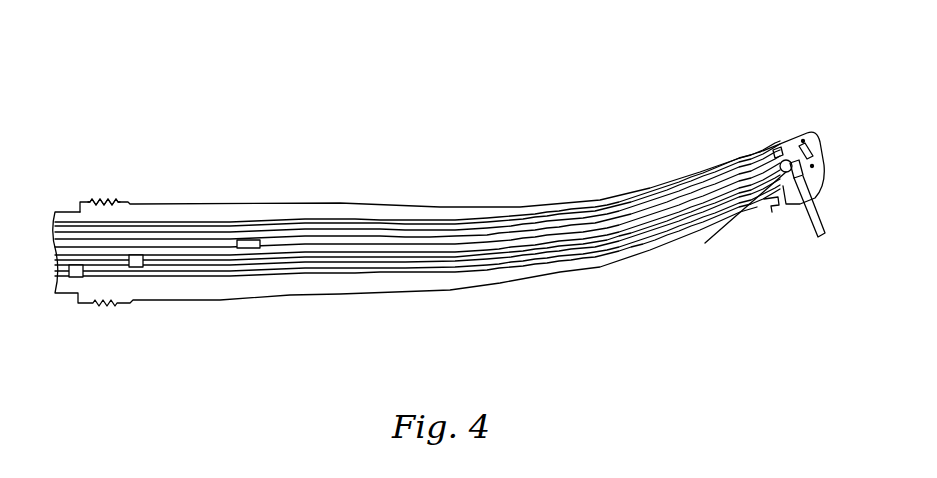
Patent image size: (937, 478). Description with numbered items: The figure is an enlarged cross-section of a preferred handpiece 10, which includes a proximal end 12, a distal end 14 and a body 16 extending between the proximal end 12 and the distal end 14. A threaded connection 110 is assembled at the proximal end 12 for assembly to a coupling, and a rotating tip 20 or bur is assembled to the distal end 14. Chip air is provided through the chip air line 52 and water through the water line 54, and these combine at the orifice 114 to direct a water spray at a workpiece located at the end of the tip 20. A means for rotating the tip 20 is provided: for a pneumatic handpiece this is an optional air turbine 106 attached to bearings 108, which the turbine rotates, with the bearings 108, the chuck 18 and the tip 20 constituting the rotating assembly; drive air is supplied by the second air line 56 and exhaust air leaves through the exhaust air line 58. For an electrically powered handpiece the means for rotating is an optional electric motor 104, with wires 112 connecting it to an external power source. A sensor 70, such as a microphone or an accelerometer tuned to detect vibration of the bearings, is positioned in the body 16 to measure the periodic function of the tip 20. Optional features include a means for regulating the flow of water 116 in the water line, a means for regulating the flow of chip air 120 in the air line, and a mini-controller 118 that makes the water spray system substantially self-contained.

The handpiece 10 is at (461, 199).
The proximal end 12 is at (218, 300).
The distal end 14 is at (804, 175).
The body 16 is at (340, 203).
The chuck 18 is at (800, 136).
The rotating tip 20 is at (818, 212).
The chip air line 52 is at (263, 265).
The water line 54 is at (335, 271).
The second air line 56 is at (148, 222).
The exhaust air line 58 is at (202, 226).
The sensor 70 is at (815, 152).
The electric motor 104 is at (777, 148).
The air turbine 106 is at (765, 203).
The bearings 108 is at (800, 182).
The threaded connection 110 is at (85, 198).
The wires 112 is at (408, 247).
The orifice 114 is at (777, 212).
The means for regulating the flow of water 116 is at (77, 278).
The mini-controller 118 is at (248, 239).
The means for regulating a flow of chip air 120 is at (140, 268).